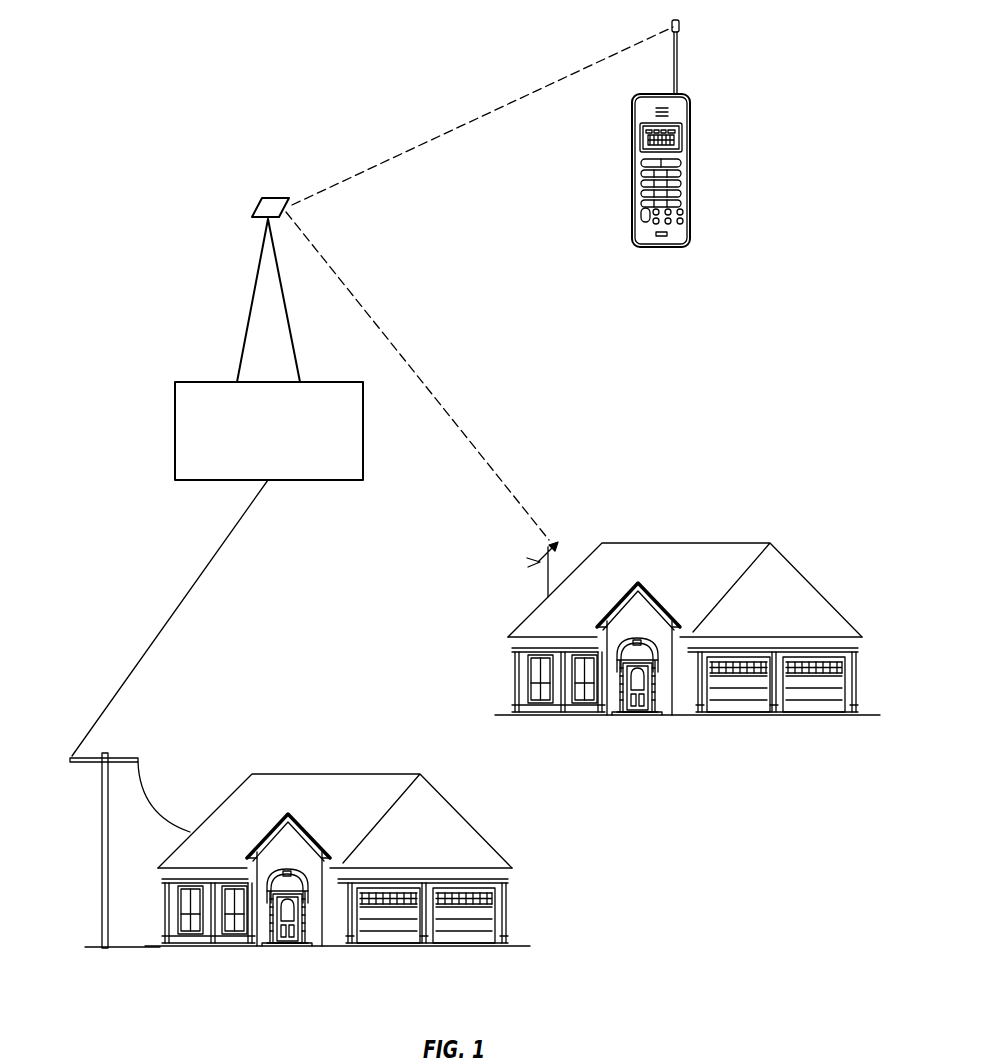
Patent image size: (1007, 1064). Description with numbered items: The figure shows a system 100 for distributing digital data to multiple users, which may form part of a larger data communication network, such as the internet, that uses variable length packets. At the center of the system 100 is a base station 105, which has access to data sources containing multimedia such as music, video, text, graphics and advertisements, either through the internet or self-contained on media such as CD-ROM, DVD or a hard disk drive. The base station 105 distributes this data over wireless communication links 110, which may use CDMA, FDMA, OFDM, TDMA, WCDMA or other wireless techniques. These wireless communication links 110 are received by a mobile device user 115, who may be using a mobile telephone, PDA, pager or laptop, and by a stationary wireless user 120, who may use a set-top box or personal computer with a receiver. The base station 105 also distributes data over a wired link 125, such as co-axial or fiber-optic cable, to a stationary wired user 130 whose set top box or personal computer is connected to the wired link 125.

The system 100 is at (228, 74).
The base station 105 is at (184, 382).
The wireless communication links 110 is at (525, 98).
The mobile device user 115 is at (690, 157).
The stationary wireless user 120 is at (645, 717).
The wired link 125 is at (205, 567).
The stationary wired user 130 is at (508, 927).